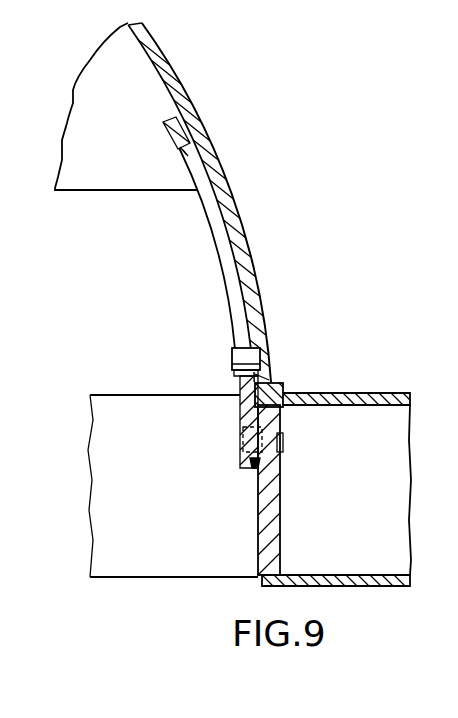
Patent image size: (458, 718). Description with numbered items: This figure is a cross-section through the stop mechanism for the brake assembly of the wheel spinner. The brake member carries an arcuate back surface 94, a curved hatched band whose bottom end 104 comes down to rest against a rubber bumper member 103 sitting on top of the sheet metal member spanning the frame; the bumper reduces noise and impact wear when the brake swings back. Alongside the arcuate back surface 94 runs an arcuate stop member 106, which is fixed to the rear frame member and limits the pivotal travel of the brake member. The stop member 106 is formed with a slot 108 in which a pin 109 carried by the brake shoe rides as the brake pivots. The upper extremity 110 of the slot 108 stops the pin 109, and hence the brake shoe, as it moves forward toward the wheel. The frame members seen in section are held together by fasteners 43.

The fasteners 43 is at (265, 508).
The arcuate back surface 94 is at (259, 292).
The rubber bumper member 103 is at (283, 382).
The bottom end 104 is at (280, 408).
The arcuate stop member 106 is at (235, 202).
The slot 108 is at (218, 232).
The pin 109 is at (232, 355).
The upper extremity 110 is at (183, 157).